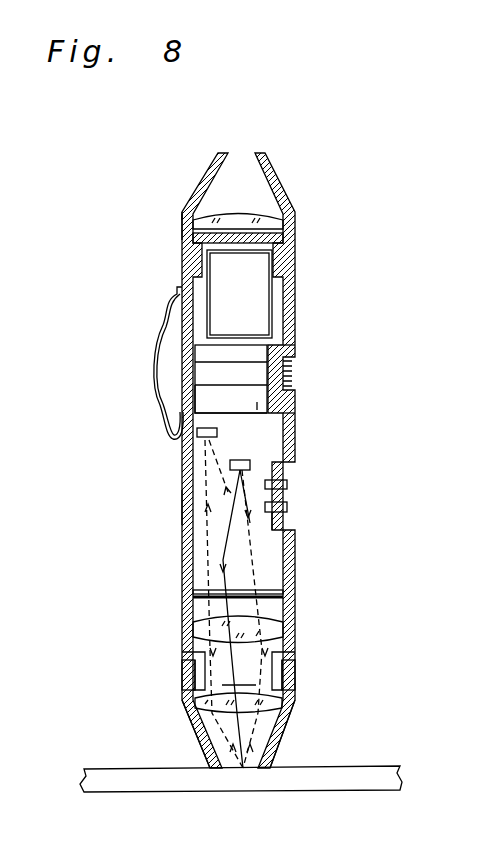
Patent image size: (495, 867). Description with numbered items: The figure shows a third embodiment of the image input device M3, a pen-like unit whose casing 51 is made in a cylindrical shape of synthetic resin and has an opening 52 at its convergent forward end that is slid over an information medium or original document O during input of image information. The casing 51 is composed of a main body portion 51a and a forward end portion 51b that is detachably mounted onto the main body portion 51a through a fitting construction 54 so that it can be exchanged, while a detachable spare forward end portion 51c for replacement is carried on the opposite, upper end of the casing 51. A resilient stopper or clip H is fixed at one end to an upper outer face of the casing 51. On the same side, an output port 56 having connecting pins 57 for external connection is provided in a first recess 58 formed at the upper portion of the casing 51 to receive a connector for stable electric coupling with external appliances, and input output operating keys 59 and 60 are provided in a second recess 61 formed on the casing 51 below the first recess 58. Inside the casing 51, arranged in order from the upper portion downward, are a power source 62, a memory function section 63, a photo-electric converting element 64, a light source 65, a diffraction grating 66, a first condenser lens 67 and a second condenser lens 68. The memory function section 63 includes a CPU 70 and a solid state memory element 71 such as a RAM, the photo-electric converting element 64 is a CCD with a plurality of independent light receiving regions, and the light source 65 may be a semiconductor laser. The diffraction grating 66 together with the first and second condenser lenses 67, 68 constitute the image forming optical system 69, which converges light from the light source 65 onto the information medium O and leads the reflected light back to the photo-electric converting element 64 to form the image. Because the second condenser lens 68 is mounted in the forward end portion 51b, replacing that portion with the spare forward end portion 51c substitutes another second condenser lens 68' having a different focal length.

The image input device M3 is at (327, 187).
The casing 51 is at (295, 305).
The main body portion 51a is at (183, 507).
The forward end portion 51b is at (183, 690).
The spare forward end portion 51c is at (180, 230).
The opening 52 is at (290, 757).
The fitting construction 54 is at (295, 665).
The output port 56 is at (302, 380).
The connecting pins 57 is at (285, 347).
The first recess 58 is at (295, 393).
The input output operating key 59 is at (290, 483).
The input output operating key 60 is at (290, 505).
The second recess 61 is at (295, 520).
The power source 62 is at (267, 283).
The memory function section 63 is at (257, 402).
The photo-electric converting element 64 is at (200, 437).
The light source 65 is at (230, 465).
The diffraction grating 66 is at (285, 588).
The first condenser lens 67 is at (295, 618).
The second condenser lens 68 is at (303, 686).
The second condenser lens 68' is at (238, 162).
The image forming optical system 69 is at (238, 672).
The CPU 70 is at (205, 375).
The solid state memory element 71 is at (207, 403).
The clip H is at (155, 342).
The information medium O is at (375, 772).